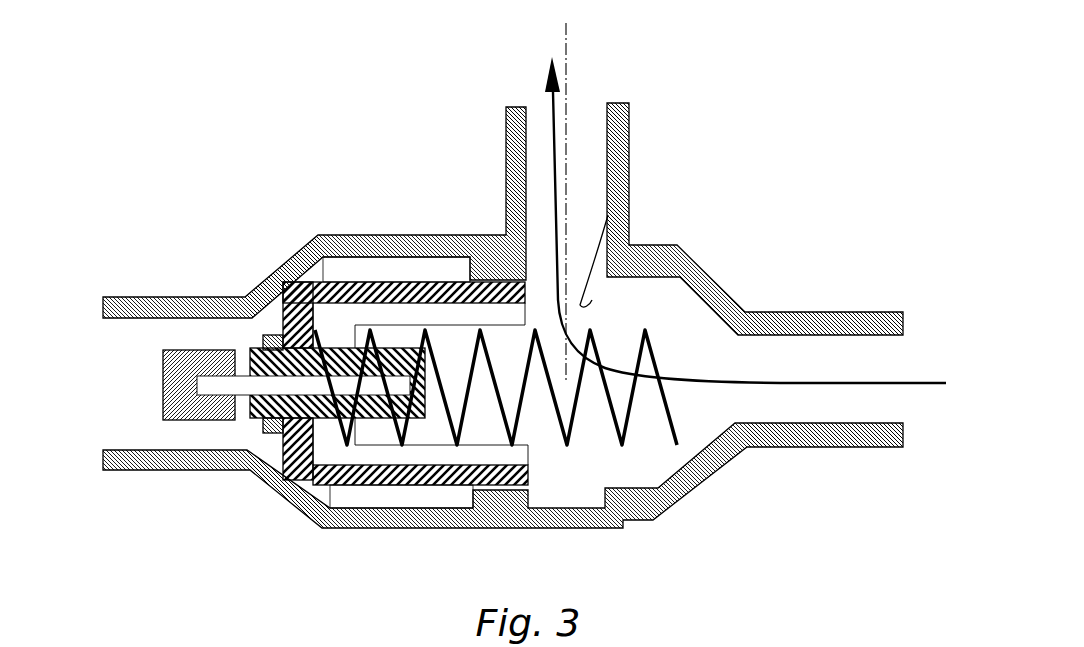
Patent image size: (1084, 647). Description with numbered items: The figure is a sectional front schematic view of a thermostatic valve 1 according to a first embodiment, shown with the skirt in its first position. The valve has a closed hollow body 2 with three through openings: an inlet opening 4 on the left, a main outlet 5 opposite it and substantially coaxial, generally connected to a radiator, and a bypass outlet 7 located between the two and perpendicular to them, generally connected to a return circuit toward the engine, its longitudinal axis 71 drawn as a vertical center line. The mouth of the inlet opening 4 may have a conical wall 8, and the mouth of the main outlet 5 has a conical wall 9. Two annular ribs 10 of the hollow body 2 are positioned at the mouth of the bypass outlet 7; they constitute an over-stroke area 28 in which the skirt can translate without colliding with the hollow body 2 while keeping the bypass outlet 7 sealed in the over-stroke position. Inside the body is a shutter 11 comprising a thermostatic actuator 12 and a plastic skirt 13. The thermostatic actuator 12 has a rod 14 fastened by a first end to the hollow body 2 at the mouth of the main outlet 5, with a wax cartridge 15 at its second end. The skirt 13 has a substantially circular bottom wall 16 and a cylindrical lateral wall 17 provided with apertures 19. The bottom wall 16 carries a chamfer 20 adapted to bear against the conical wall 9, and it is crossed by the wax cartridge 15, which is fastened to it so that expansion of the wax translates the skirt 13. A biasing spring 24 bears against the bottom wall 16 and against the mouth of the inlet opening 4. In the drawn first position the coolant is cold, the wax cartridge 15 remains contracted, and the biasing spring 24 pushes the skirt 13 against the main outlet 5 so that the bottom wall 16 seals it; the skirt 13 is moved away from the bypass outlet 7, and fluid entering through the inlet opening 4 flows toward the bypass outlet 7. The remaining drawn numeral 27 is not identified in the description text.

The thermostatic valve 1 is at (826, 111).
The hollow body 2 is at (503, 342).
The inlet opening 4 is at (875, 355).
The main outlet 5 is at (122, 386).
The bypass outlet 7 is at (587, 124).
The conical wall 8 is at (704, 322).
The conical wall 9 is at (322, 268).
The annular ribs 10 is at (506, 182).
The shutter 11 is at (268, 320).
The thermostatic actuator 12 is at (273, 426).
The skirt 13 is at (540, 472).
The rod 14 is at (243, 420).
The wax cartridge 15 is at (275, 400).
The bottom wall 16 is at (268, 470).
The lateral wall 17 is at (415, 295).
The apertures 19 is at (456, 345).
The chamfer 20 is at (273, 272).
The biasing spring 24 is at (662, 364).
The lower housing wall 27 is at (670, 500).
The over-stroke area 28 is at (608, 215).
The longitudinal axis 71 is at (567, 42).